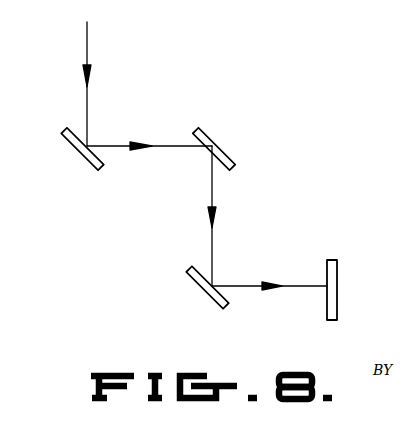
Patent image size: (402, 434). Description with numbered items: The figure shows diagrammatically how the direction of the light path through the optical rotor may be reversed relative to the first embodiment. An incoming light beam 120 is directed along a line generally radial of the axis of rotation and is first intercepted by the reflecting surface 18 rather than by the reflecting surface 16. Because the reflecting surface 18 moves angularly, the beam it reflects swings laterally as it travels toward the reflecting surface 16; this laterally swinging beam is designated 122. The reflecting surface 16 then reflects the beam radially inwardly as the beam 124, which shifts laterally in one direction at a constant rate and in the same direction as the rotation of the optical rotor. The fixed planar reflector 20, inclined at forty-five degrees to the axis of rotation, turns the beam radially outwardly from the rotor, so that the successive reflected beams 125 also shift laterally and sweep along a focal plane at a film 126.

The incoming light beam 120 is at (87, 48).
The reflecting surface 18 is at (68, 126).
The laterally swinging beam 122 is at (166, 147).
The reflecting surface 16 is at (190, 130).
The reflected beam 124 is at (212, 238).
The fixed planar reflector 20 is at (192, 264).
The reflected beams 125 is at (292, 288).
The film 126 is at (325, 266).